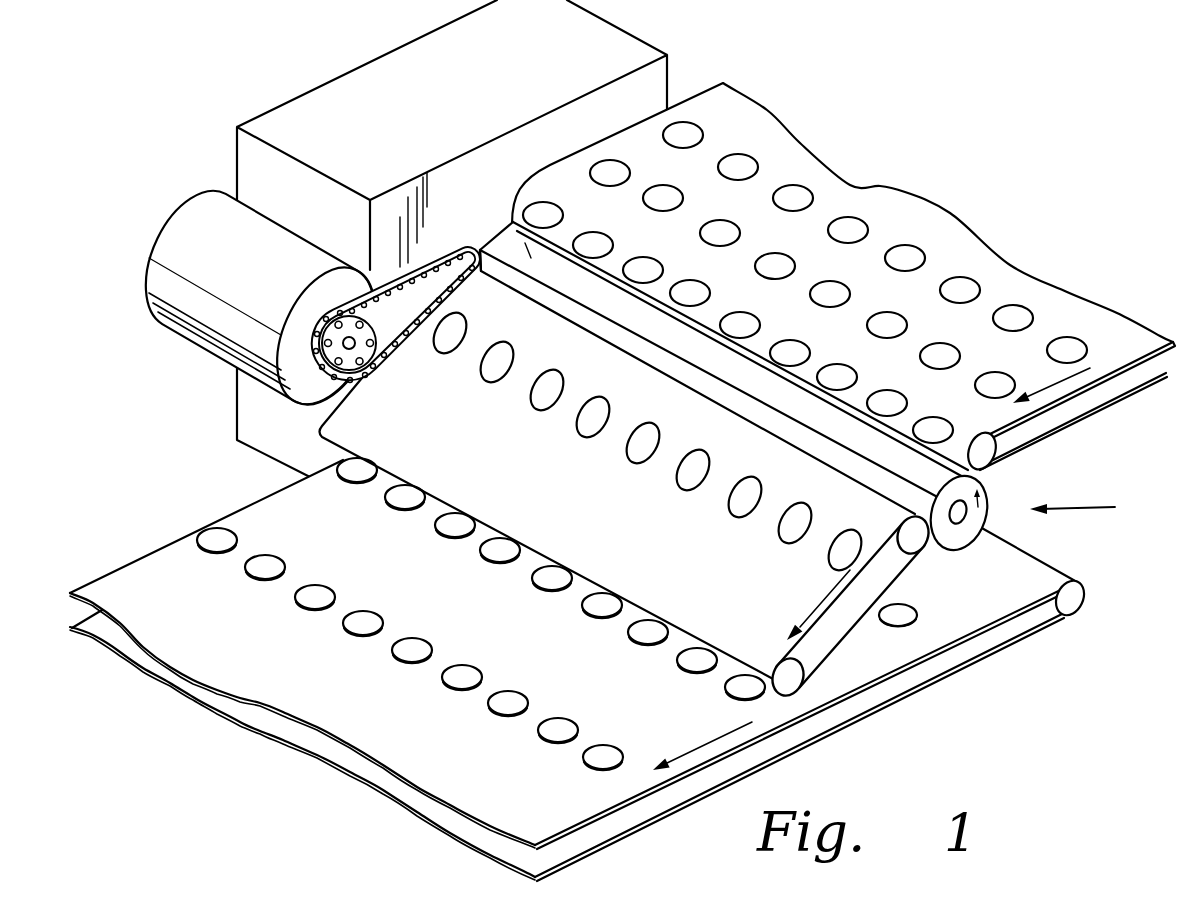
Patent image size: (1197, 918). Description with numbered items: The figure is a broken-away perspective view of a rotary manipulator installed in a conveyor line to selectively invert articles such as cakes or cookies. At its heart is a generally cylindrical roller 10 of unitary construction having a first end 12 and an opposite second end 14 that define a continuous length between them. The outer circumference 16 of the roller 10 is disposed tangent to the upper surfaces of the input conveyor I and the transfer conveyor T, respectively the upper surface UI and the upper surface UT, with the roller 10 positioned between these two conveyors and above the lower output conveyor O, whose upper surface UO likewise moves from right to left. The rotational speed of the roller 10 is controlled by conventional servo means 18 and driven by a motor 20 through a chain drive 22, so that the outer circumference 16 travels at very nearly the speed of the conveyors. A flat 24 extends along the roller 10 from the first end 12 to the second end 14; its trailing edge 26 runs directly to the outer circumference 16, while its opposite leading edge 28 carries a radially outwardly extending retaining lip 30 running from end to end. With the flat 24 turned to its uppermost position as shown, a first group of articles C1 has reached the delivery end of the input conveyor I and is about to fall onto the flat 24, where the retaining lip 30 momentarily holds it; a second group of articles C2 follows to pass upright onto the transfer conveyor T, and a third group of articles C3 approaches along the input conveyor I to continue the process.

The roller 10 is at (1097, 517).
The first end 12 is at (512, 222).
The second end 14 is at (977, 540).
The outer circumference 16 is at (657, 352).
The servo means 18 is at (474, 107).
The motor 20 is at (259, 279).
The chain drive 22 is at (391, 286).
The flat 24 is at (733, 360).
The trailing edge 26 is at (795, 380).
The leading edge 28 is at (840, 440).
The retaining lip 30 is at (817, 425).
The first group of articles C1 is at (736, 312).
The second group of articles C2 is at (772, 253).
The third group of articles C3 is at (799, 186).
The input conveyor I is at (1015, 267).
The lower output conveyor O is at (817, 740).
The transfer conveyor T is at (857, 628).
The upper surface of input conveyor UI is at (878, 286).
The upper surface of transfer conveyor UT is at (624, 511).
The upper surface of lower output conveyor UO is at (503, 628).